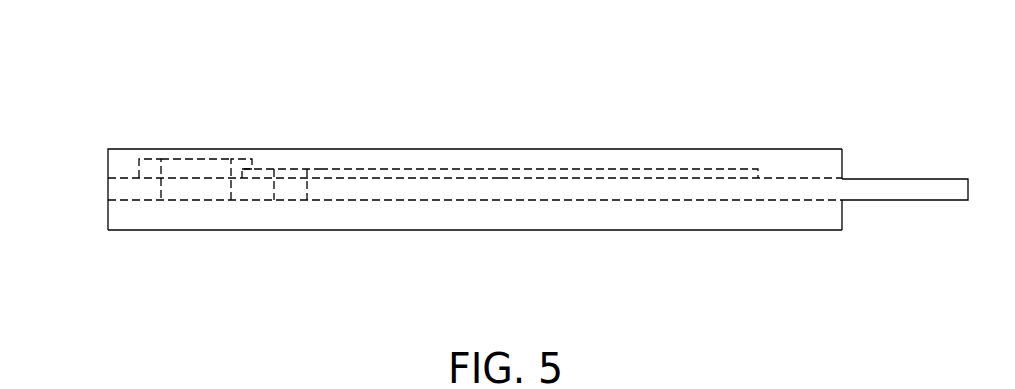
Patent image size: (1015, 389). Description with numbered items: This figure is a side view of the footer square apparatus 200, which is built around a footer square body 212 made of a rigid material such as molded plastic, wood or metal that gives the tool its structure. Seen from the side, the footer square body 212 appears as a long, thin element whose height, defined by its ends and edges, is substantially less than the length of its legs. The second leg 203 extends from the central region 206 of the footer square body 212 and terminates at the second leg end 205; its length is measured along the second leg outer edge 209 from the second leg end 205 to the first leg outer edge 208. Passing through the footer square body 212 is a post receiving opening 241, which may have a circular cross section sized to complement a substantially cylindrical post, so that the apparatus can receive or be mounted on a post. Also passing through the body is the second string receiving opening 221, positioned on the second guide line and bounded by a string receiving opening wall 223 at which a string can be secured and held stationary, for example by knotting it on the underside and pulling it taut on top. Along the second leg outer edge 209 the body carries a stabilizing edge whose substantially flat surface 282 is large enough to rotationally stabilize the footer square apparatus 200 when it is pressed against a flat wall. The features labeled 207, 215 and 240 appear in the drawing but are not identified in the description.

The footer square apparatus 200 is at (687, 112).
The second leg 203 is at (427, 138).
The second leg end 205 is at (970, 190).
The central region 206 is at (160, 240).
The top layer 207 is at (108, 168).
The first leg outer edge 208 is at (108, 188).
The second leg outer edge 209 is at (687, 190).
The footer square body 212 is at (587, 237).
The conductive trace 215 is at (617, 178).
The second string receiving opening 221 is at (293, 172).
The string receiving opening wall 223 is at (273, 184).
The component 240 is at (193, 170).
The post receiving opening 241 is at (160, 172).
The substantially flat surface 282 is at (780, 213).